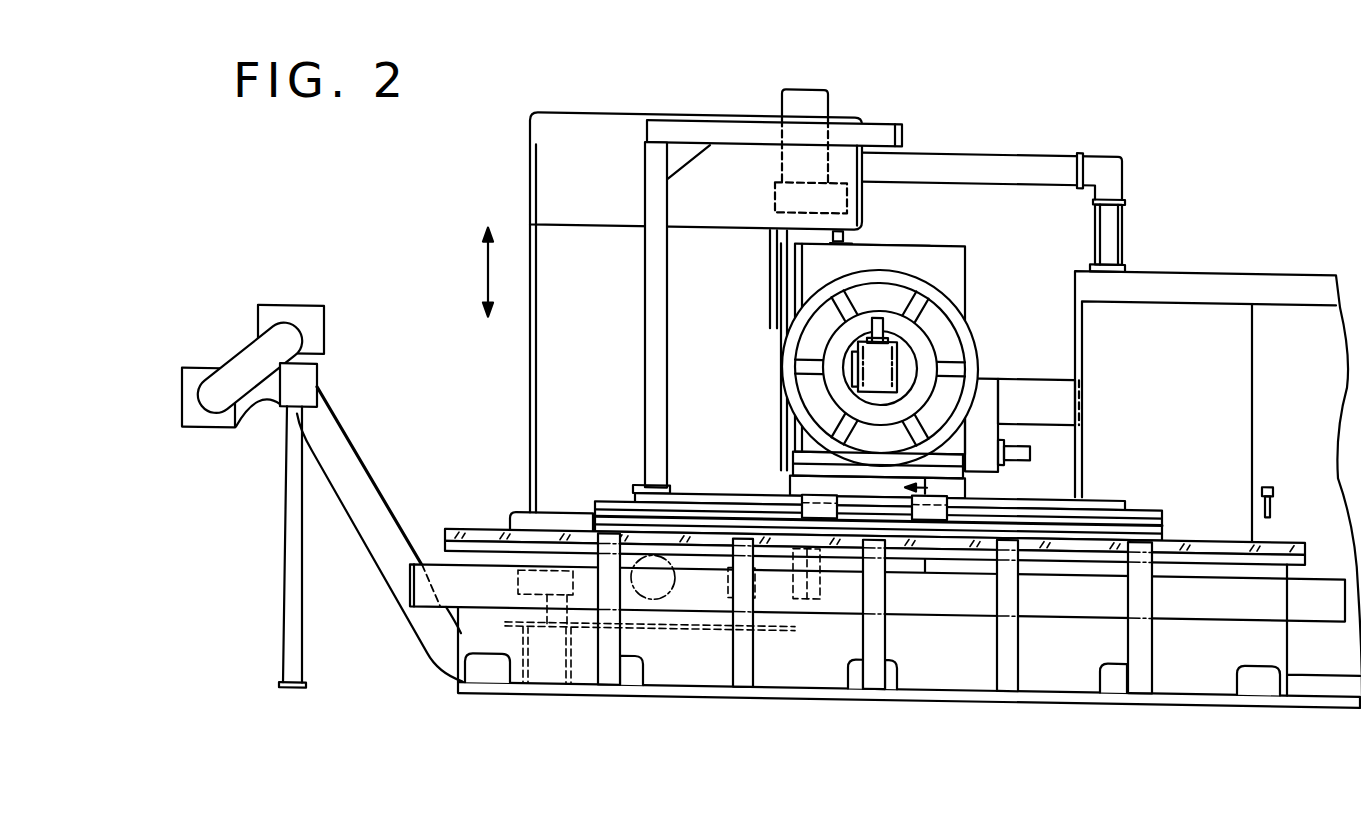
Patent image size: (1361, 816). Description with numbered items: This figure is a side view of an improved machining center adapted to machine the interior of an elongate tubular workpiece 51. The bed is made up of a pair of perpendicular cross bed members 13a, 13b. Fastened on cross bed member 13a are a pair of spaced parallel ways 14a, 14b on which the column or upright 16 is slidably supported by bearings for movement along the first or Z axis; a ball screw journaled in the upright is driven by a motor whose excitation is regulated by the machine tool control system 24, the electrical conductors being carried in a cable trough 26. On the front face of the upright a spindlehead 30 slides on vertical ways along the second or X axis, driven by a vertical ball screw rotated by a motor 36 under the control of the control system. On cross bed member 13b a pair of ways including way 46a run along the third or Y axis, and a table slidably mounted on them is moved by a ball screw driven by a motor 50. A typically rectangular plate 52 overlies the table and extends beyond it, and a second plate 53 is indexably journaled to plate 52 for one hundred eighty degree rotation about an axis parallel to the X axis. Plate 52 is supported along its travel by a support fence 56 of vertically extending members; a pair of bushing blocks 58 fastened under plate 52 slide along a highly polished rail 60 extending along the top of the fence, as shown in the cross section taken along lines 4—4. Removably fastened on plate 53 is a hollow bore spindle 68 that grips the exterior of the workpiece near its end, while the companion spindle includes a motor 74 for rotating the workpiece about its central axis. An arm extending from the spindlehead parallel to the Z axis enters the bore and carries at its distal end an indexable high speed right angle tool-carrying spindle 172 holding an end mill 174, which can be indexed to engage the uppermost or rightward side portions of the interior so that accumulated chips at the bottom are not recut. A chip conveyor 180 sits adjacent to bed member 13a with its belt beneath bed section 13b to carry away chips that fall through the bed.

The section line 4- 4 is at (926, 543).
The cross bed member 13a is at (676, 635).
The cross bed member 13b is at (966, 641).
The way 14a is at (518, 594).
The way 14b is at (732, 592).
The upright 16 is at (548, 368).
The machine tool control system 24 is at (1227, 268).
The cable trough 26 is at (990, 153).
The spindlehead 30 is at (943, 256).
The motor 36 is at (826, 93).
The way 46a is at (1203, 536).
The motor 50 is at (430, 572).
The tubular workpiece 51 is at (937, 338).
The plate 52 is at (808, 482).
The second plate 53 is at (793, 456).
The support fence 56 is at (872, 643).
The bushing block 58 is at (826, 519).
The rail 60 is at (1138, 506).
The hollow bore spindle 68 is at (952, 297).
The motor 74 is at (1018, 453).
The tool-carrying spindle 172 is at (887, 395).
The end mill 174 is at (893, 300).
The chip conveyor 180 is at (347, 450).